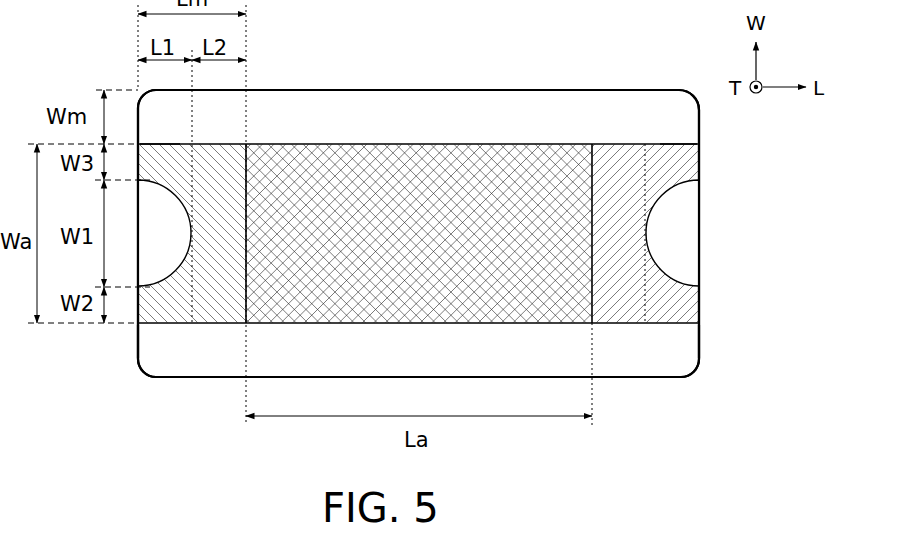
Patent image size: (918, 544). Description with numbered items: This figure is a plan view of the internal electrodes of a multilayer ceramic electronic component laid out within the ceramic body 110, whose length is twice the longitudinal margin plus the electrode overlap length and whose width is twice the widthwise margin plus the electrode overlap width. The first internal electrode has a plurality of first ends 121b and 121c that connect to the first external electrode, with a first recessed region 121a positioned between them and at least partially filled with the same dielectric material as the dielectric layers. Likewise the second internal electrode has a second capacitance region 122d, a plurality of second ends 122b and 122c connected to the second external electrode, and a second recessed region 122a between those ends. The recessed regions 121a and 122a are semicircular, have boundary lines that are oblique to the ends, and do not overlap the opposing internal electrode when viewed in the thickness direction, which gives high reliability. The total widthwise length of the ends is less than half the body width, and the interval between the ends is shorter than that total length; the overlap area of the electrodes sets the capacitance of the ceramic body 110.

The ceramic body 110 is at (492, 82).
The first recessed region 121a is at (672, 265).
The first end 121b is at (700, 341).
The first end 121c is at (663, 173).
The second recessed region 122a is at (161, 267).
The second end 122b is at (153, 315).
The second end 122c is at (172, 157).
The second capacitance region 122d is at (216, 312).